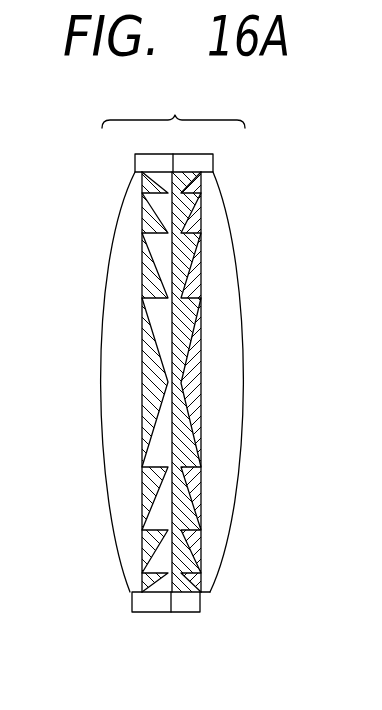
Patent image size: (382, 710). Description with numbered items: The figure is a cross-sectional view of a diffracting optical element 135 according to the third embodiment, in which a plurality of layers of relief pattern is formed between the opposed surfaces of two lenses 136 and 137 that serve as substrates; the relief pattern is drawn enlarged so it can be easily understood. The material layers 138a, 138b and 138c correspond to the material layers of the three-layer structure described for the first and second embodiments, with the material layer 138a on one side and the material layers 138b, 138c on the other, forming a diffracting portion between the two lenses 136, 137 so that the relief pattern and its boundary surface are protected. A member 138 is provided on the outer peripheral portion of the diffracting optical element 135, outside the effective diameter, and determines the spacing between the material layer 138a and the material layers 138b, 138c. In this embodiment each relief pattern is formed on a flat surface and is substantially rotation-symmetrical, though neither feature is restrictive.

The diffracting optical element 135 is at (173, 107).
The lens 136 is at (117, 237).
The lens 137 is at (233, 228).
The spacing determining member 138 is at (214, 158).
The material layer 138a is at (145, 542).
The material layer 138b is at (195, 518).
The material layer 138c is at (193, 490).